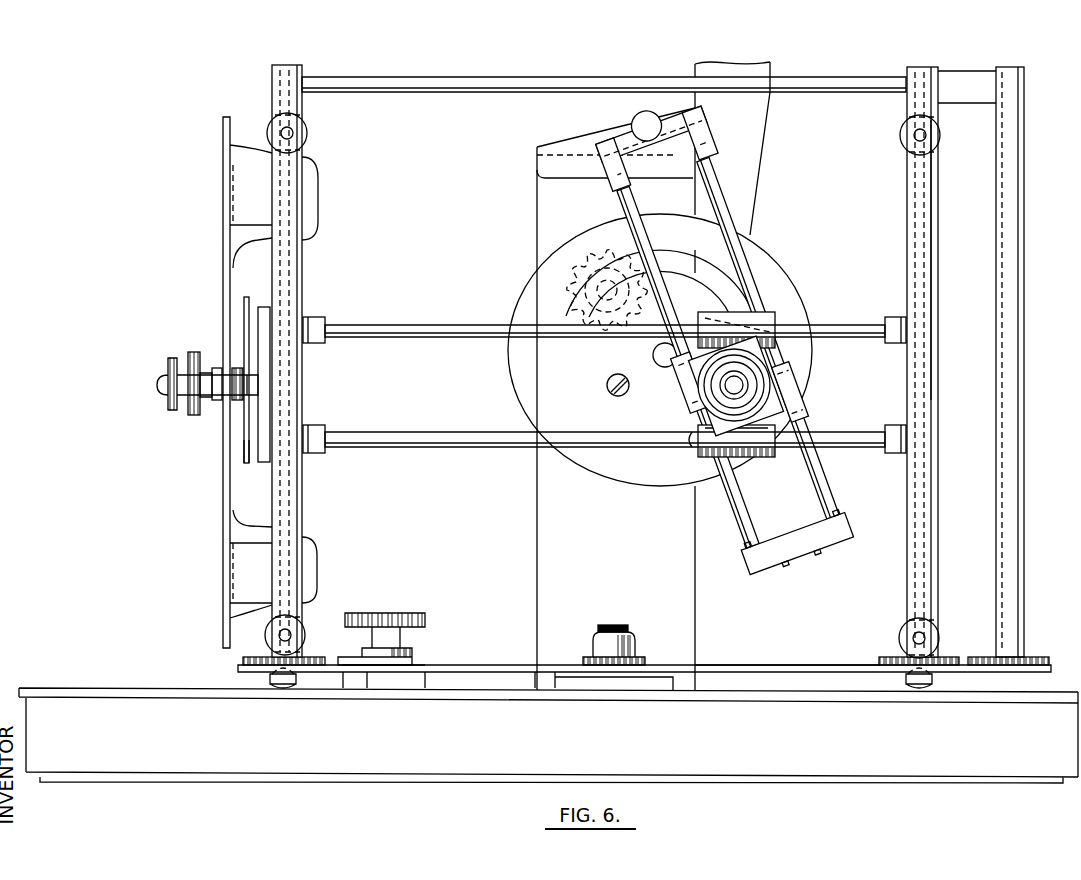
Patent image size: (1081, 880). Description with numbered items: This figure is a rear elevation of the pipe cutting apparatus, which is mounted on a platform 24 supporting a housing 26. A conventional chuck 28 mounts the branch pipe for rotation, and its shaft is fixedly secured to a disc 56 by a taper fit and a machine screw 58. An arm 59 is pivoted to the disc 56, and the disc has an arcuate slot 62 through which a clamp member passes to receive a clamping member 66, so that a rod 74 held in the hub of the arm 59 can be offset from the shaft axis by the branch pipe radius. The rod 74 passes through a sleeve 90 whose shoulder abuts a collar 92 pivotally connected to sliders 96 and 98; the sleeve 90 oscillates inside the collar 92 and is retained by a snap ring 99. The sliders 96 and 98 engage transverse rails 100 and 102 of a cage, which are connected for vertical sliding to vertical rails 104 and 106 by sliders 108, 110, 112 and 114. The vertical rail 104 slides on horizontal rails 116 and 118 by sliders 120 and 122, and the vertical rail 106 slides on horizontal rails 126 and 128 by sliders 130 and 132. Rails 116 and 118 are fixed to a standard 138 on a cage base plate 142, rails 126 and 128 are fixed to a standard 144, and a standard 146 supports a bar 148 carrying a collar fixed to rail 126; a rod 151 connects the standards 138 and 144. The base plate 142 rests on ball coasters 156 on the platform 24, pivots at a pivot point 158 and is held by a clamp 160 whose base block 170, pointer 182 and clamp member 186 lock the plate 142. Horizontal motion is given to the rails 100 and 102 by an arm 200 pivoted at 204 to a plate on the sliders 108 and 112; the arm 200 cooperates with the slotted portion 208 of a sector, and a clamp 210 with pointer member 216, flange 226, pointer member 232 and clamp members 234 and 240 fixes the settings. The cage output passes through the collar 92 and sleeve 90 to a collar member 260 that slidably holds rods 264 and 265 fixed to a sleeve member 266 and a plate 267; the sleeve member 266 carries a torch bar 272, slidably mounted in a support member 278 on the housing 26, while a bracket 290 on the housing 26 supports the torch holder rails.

The platform 24 is at (136, 688).
The housing 26 is at (540, 237).
The chuck 28 is at (508, 384).
The disc 56 is at (792, 275).
The machine screw 58 is at (607, 387).
The arm 59 is at (650, 350).
The arcuate slot 62 is at (748, 247).
The clamping member 66 is at (575, 273).
The rod 74 is at (752, 385).
The sleeve 90 is at (765, 350).
The collar 92 is at (690, 400).
The slider 96 is at (770, 318).
The slider 98 is at (762, 460).
The snap ring 99 is at (698, 447).
The transverse rail 100 is at (420, 325).
The transverse rail 102 is at (410, 432).
The vertical rail 104 is at (719, 53).
The vertical rail 106 is at (940, 206).
The slider 108 is at (313, 317).
The slider 110 is at (895, 317).
The slider 112 is at (318, 453).
The slider 114 is at (892, 455).
The horizontal rail 116 is at (282, 128).
The horizontal rail 118 is at (278, 636).
The slider 120 is at (306, 132).
The slider 122 is at (300, 628).
The horizontal rail 126 is at (914, 137).
The horizontal rail 128 is at (912, 636).
The slider 130 is at (940, 132).
The slider 132 is at (940, 636).
The standard 138 is at (310, 198).
The cage base plate 142 is at (767, 668).
The standard 144 is at (938, 240).
The standard 146 is at (1024, 236).
The bar 148 is at (963, 88).
The rod 151 is at (826, 80).
The ball coasters 156 is at (283, 690).
The pivot point 158 is at (629, 612).
The clamp 160 is at (447, 580).
The base block 170 is at (415, 665).
The pointer 182 is at (343, 656).
The clamp member 186 is at (425, 615).
The arm 200 is at (256, 420).
The pivot 204 is at (247, 465).
The slotted portion 208 is at (228, 222).
The clamp 210 is at (146, 368).
The pointer member 216 is at (246, 300).
The flange 226 is at (236, 368).
The pointer member 232 is at (218, 402).
The clamp member 234 is at (195, 352).
The clamp member 240 is at (165, 412).
The collar member 260 is at (785, 395).
The rod 264 is at (630, 212).
The rod 265 is at (750, 190).
The sleeve member 266 is at (715, 135).
The plate 267 is at (786, 560).
The torch bar 272 is at (632, 125).
The support member 278 is at (540, 147).
The bracket 290 is at (764, 62).